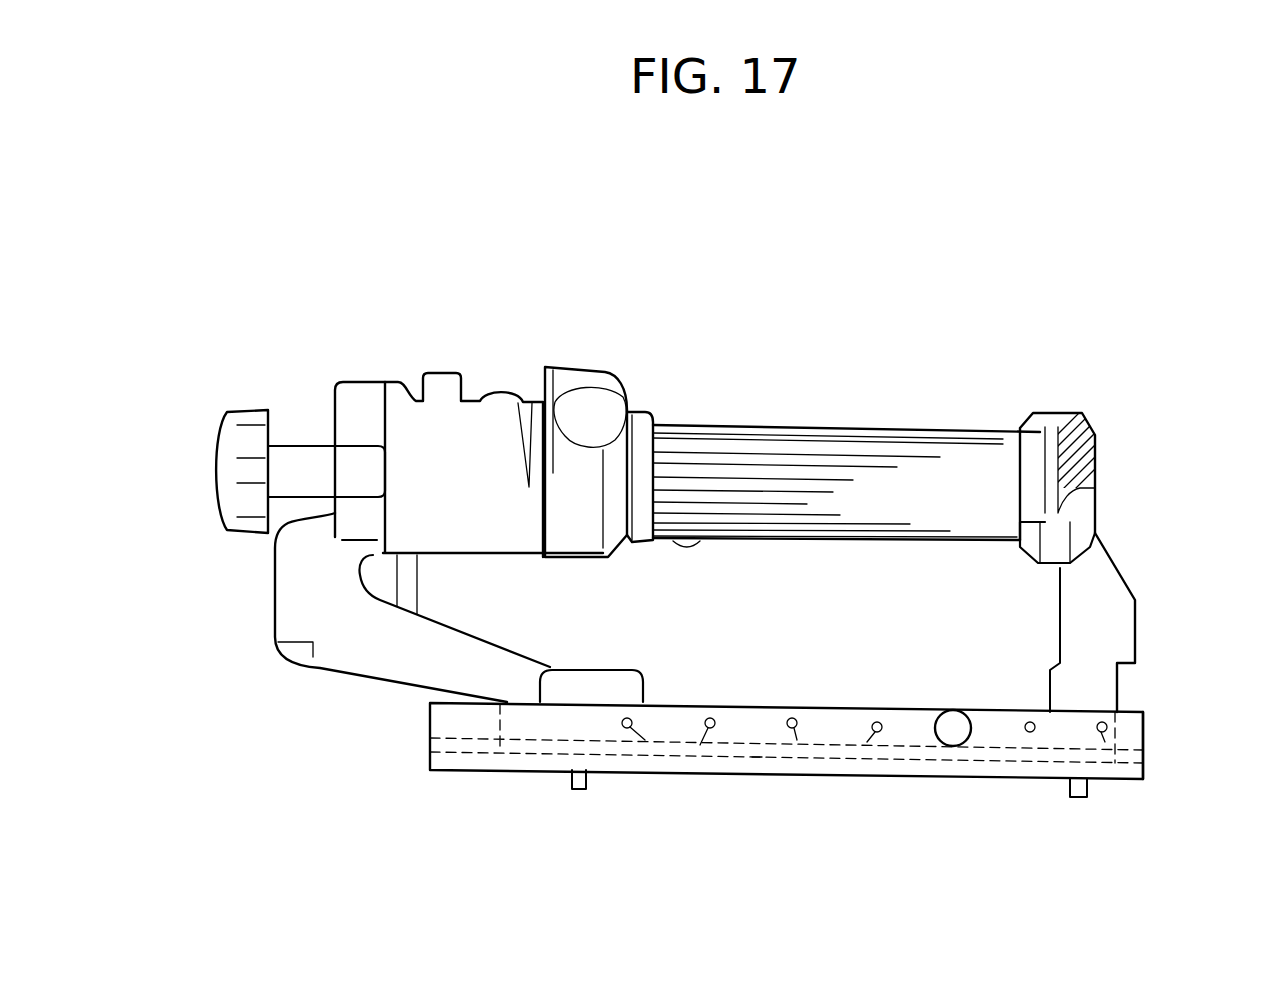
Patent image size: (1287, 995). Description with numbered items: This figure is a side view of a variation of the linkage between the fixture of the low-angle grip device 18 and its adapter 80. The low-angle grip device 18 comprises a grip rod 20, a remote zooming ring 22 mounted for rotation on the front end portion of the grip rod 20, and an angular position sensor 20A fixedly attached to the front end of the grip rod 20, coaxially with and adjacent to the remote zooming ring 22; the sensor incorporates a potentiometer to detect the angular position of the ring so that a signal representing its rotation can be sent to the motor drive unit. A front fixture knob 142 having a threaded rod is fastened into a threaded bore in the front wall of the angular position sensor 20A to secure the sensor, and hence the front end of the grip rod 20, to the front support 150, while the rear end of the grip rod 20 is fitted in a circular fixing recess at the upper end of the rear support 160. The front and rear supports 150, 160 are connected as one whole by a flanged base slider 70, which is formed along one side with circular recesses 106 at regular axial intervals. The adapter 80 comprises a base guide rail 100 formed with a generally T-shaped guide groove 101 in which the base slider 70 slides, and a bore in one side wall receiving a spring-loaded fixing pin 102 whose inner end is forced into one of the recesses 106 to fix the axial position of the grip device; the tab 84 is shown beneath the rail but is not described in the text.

The front fixture knob 142 is at (270, 411).
The angular position sensor 20A is at (463, 407).
The remote zooming ring 22 is at (607, 373).
The low-angle grip device 18 is at (745, 396).
The grip rod 20 is at (933, 427).
The rear support 160 is at (1128, 577).
The front support 150 is at (407, 660).
The base guide rail 100 is at (917, 767).
The base slider 70 is at (905, 730).
The adapter 80 is at (1160, 741).
The tab 84 is at (568, 792).
The circular recesses 106 is at (642, 737).
The T-shaped guide groove 101 is at (757, 750).
The fixing pin 102 is at (960, 737).